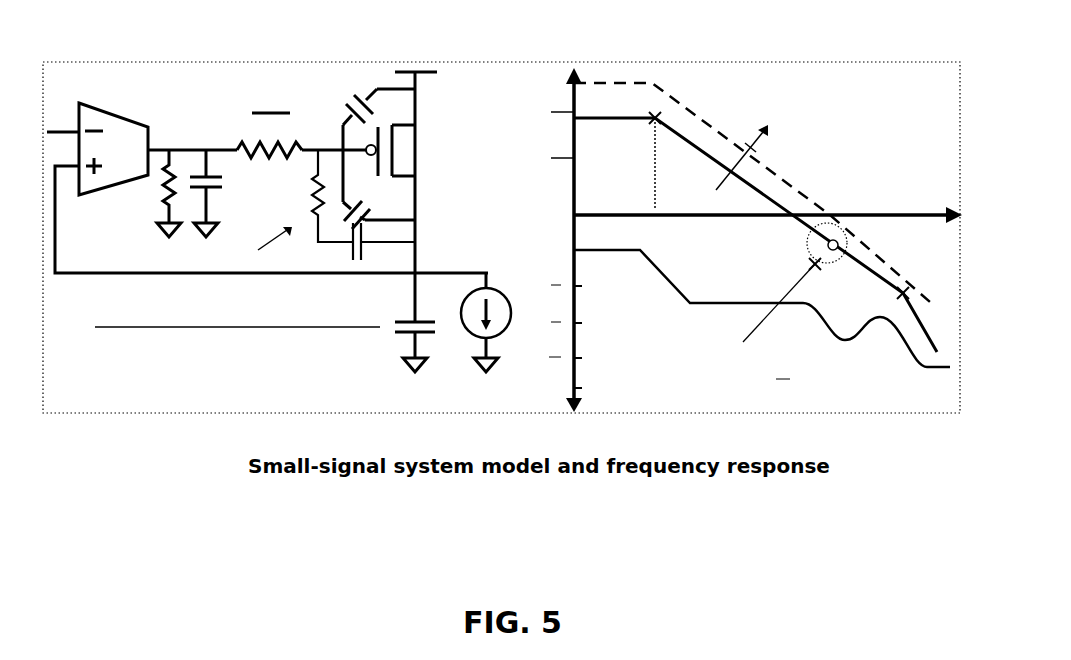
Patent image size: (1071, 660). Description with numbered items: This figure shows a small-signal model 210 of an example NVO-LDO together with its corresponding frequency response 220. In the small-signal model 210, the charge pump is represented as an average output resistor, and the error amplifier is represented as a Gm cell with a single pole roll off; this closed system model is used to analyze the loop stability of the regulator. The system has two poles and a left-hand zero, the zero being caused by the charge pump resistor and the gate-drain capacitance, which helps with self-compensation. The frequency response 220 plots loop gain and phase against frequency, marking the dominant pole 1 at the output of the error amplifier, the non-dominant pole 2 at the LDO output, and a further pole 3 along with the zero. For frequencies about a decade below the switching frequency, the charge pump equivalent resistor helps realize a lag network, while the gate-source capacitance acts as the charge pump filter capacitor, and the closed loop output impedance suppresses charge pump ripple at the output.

The small-signal model 210 is at (271, 62).
The frequency response 220 is at (650, 62).
The dominant pole P1 1 is at (647, 161).
The pole P2 2 is at (908, 245).
The pole P3 3 is at (825, 231).